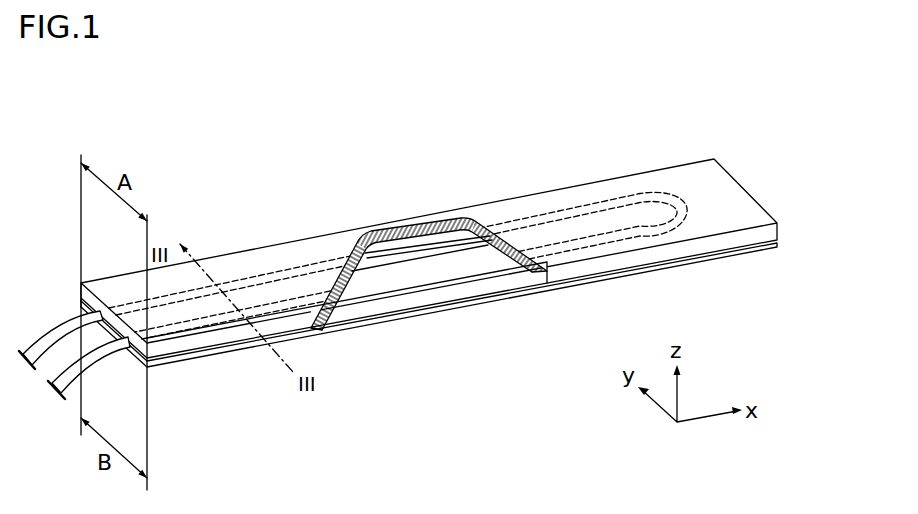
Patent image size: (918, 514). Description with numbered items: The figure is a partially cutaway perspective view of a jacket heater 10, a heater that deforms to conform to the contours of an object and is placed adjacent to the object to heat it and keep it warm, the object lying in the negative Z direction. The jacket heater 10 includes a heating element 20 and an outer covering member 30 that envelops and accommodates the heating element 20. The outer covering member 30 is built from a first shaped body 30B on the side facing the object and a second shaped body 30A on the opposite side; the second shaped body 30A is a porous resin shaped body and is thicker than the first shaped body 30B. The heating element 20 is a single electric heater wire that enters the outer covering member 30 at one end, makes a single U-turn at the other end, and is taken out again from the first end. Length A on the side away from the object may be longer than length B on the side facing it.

The jacket heater 10 is at (483, 227).
The heating element 20 is at (432, 246).
The outer covering member 30 is at (483, 263).
The second shaped body 30A is at (746, 207).
The first shaped body 30B is at (776, 243).